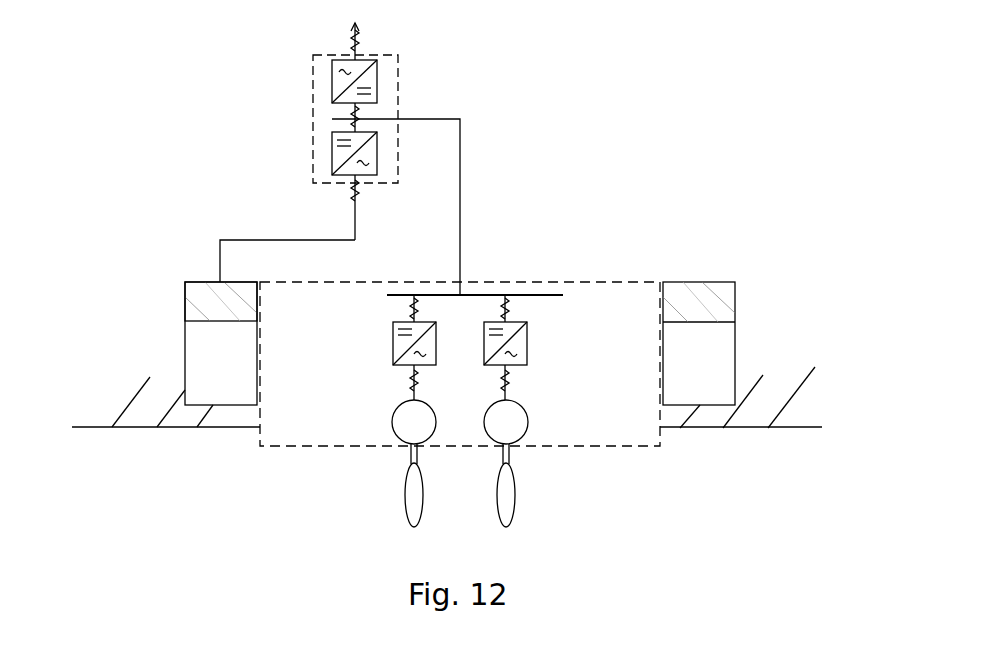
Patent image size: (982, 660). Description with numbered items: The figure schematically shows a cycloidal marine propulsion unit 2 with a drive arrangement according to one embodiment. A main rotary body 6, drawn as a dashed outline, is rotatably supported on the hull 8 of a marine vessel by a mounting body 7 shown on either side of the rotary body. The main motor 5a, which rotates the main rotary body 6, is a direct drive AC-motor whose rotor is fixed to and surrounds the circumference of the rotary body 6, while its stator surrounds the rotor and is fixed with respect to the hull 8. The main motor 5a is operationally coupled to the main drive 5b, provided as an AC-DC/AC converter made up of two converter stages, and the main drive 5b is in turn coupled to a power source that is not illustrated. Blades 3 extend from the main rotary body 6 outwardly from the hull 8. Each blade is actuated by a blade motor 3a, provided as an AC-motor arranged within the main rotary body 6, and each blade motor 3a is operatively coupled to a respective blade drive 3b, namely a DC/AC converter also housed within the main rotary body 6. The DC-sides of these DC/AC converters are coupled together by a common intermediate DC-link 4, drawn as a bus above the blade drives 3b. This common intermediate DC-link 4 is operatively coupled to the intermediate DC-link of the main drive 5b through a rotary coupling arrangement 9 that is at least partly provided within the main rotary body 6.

The cycloidal marine propulsion unit 2 is at (692, 160).
The blades 3 is at (405, 495).
The blade motors 3a is at (393, 425).
The blade drives 3b is at (393, 358).
The common intermediate DC-link 4 is at (413, 294).
The main motor 5a is at (185, 282).
The main drive 5b is at (313, 122).
The main rotary body 6 is at (635, 282).
The mounting body 7 is at (185, 337).
The hull 8 is at (100, 427).
The rotary coupling arrangement 9 is at (469, 283).